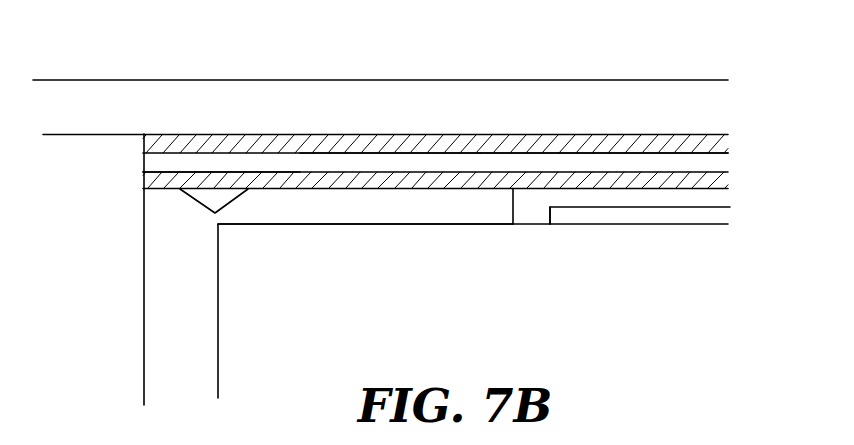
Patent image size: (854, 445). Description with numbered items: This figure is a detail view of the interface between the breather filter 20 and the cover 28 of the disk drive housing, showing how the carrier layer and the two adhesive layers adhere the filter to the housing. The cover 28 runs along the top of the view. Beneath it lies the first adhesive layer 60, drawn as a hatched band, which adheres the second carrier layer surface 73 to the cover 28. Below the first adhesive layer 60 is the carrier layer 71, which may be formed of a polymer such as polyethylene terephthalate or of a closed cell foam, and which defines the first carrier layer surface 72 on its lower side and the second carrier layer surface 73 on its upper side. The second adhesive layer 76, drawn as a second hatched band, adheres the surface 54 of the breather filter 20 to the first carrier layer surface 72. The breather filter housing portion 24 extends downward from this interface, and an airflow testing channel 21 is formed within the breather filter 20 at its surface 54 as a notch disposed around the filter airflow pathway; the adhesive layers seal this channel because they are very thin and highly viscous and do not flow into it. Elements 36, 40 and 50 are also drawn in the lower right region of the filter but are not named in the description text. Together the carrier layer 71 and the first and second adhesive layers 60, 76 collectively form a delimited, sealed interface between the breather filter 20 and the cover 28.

The breather filter 20 is at (692, 270).
The airflow testing channel 21 is at (210, 197).
The breather filter housing portion 24 is at (156, 321).
The cover 28 is at (105, 80).
The circuit board 36 is at (703, 202).
The support member 40 is at (535, 215).
The cavity 50 is at (473, 283).
The surface 54 is at (305, 178).
The first adhesive layer 60 is at (713, 142).
The carrier layer 71 is at (158, 160).
The first carrier layer surface 72 is at (430, 167).
The second carrier layer surface 73 is at (482, 152).
The second adhesive layer 76 is at (725, 180).